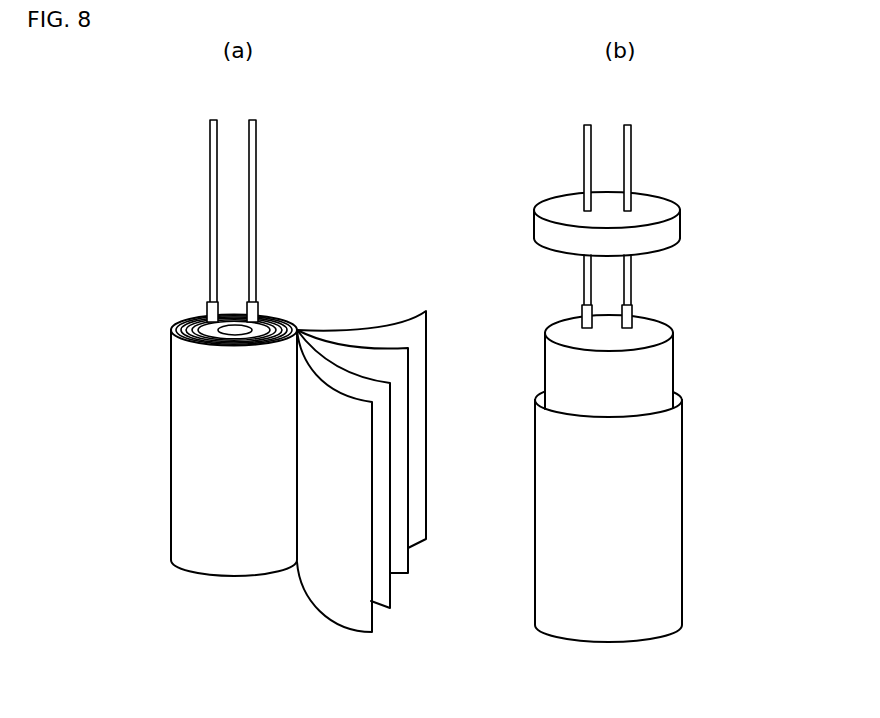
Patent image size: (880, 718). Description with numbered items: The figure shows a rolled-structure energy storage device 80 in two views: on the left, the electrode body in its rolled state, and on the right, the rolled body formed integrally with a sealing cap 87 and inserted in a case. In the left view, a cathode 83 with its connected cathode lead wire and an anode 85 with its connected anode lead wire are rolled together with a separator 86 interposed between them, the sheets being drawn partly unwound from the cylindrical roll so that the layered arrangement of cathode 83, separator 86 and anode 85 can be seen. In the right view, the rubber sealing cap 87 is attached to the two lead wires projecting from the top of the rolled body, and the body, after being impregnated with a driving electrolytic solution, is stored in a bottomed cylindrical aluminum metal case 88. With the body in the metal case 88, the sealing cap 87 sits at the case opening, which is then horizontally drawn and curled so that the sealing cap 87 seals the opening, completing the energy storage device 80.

The energy storage device 80 is at (636, 414).
The cathode 83 is at (408, 573).
The anode 85 is at (312, 610).
The separator 86 is at (410, 315).
The sealing cap 87 is at (680, 233).
The metal case 88 is at (662, 560).